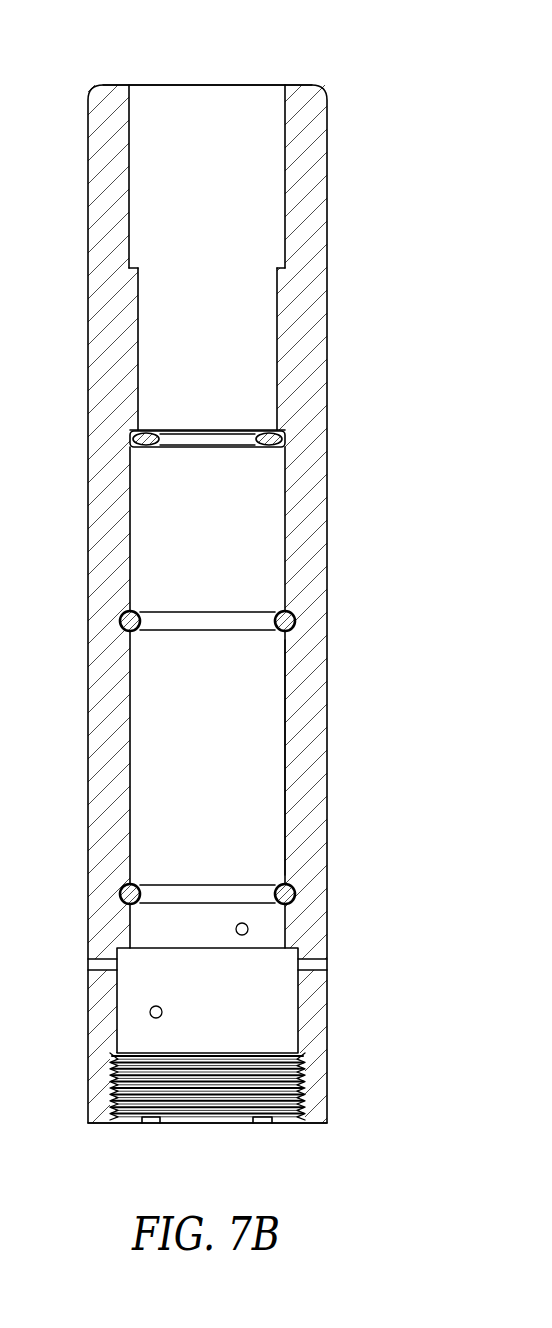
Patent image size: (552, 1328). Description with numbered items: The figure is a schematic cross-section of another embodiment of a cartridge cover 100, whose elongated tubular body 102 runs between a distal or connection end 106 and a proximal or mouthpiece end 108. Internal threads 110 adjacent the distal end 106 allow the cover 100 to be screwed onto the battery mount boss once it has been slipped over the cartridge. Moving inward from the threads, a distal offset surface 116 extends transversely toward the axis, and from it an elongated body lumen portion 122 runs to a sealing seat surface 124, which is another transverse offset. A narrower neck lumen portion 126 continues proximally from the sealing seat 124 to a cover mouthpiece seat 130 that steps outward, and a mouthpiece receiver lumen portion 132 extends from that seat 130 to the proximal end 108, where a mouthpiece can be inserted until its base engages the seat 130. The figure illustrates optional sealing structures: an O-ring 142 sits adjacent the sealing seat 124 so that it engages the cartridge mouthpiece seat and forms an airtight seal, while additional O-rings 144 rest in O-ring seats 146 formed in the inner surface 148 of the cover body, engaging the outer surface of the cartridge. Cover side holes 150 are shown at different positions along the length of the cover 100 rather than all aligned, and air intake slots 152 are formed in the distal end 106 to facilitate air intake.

The cover 100 is at (140, 52).
The elongated tubular body 102 is at (102, 778).
The distal or connection end 106 is at (125, 1150).
The proximal or mouthpiece end 108 is at (287, 83).
The internal threads 110 is at (265, 1095).
The distal offset surface 116 is at (291, 949).
The body lumen portion 122 is at (176, 712).
The sealing seat surface 124 is at (284, 448).
The neck lumen portion 126 is at (235, 334).
The cover mouthpiece seat 130 is at (284, 266).
The mouthpiece receiver lumen portion 132 is at (248, 142).
The O-ring 142 is at (262, 446).
The additional O-rings 144 is at (222, 623).
The O-ring seats 146 is at (280, 612).
The inner surface 148 is at (284, 718).
The cover side holes 150 is at (308, 965).
The air intake slots 152 is at (256, 1121).